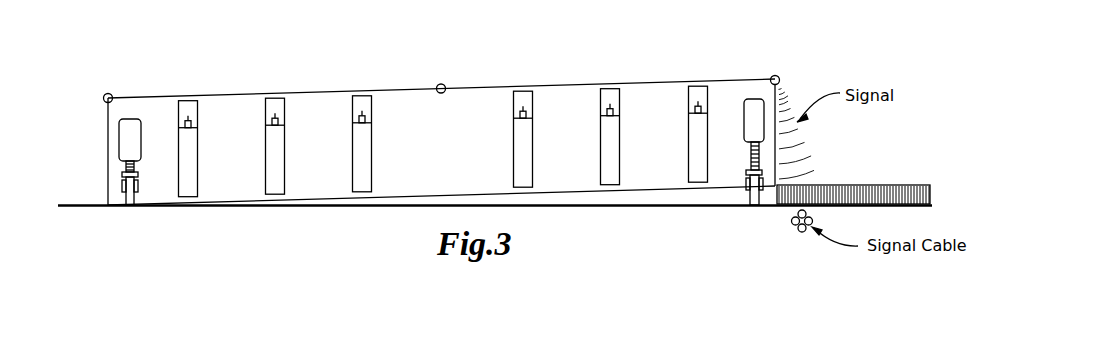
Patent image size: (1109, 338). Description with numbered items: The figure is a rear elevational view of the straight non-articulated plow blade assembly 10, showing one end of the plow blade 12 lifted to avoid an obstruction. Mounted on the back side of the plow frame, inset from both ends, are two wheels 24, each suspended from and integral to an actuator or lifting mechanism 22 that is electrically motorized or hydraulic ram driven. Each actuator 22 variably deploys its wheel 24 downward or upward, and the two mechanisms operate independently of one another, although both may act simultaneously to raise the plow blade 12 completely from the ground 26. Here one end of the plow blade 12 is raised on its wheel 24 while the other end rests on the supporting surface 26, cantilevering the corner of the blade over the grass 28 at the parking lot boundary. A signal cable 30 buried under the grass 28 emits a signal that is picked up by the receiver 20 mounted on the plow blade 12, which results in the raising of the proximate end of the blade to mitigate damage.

The straight non-articulated plow blade assembly 10 is at (601, 50).
The plow blade 12 is at (307, 108).
The receiver 20 is at (103, 98).
The actuator or lifting mechanism 22 is at (128, 137).
The wheel 24 is at (128, 190).
The ground 26 is at (268, 206).
The grass 28 is at (860, 187).
The signal cable 30 is at (800, 229).